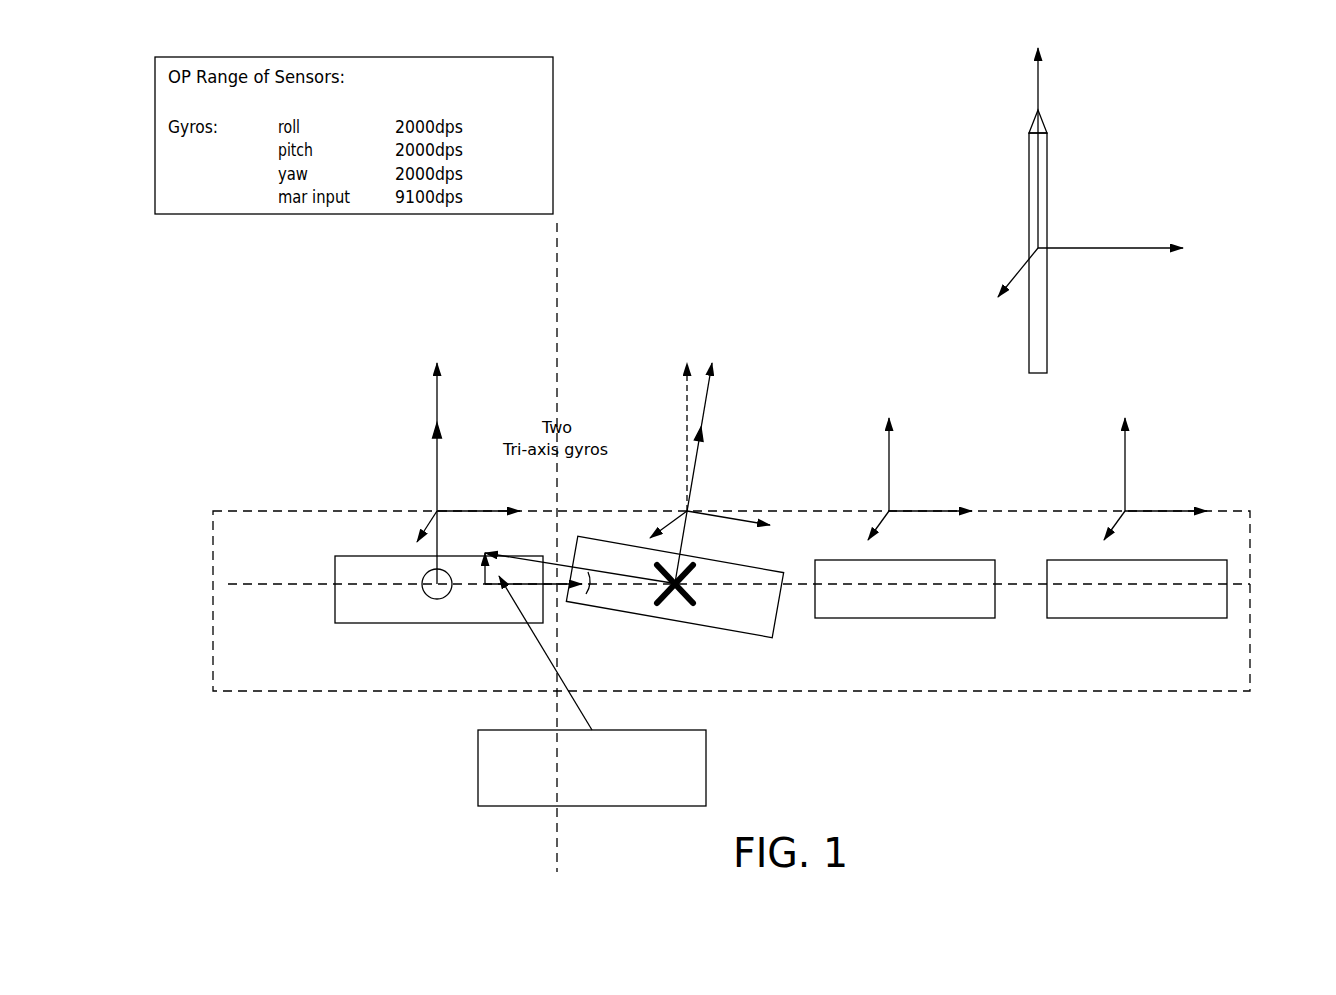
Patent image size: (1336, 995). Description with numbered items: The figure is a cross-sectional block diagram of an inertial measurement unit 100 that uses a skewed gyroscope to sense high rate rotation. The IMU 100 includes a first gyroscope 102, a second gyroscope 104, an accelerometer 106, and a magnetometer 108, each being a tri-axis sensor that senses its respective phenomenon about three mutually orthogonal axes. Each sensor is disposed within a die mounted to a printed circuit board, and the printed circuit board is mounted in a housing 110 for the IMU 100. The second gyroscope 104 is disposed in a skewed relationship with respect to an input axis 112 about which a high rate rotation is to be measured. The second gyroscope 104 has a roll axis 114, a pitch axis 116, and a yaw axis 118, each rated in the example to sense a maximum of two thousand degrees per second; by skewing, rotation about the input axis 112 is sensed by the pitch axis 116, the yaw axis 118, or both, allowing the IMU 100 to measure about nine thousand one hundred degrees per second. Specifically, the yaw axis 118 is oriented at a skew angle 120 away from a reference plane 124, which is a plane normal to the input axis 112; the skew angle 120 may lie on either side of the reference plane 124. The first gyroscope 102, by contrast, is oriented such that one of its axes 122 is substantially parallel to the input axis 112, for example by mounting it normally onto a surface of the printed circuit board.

The inertial measurement unit 100 is at (754, 190).
The first gyroscope 102 is at (371, 623).
The second gyroscope 104 is at (598, 608).
The accelerometer 106 is at (862, 618).
The magnetometer 108 is at (1094, 618).
The housing 110 is at (281, 511).
The input axis 112 is at (1038, 99).
The roll axis 114 is at (705, 422).
The pitch axis 116 is at (672, 516).
The yaw axis 118 is at (730, 520).
The skew angle 120 is at (512, 572).
The axis of first gyroscope 122 is at (435, 480).
The reference plane 124 is at (296, 583).